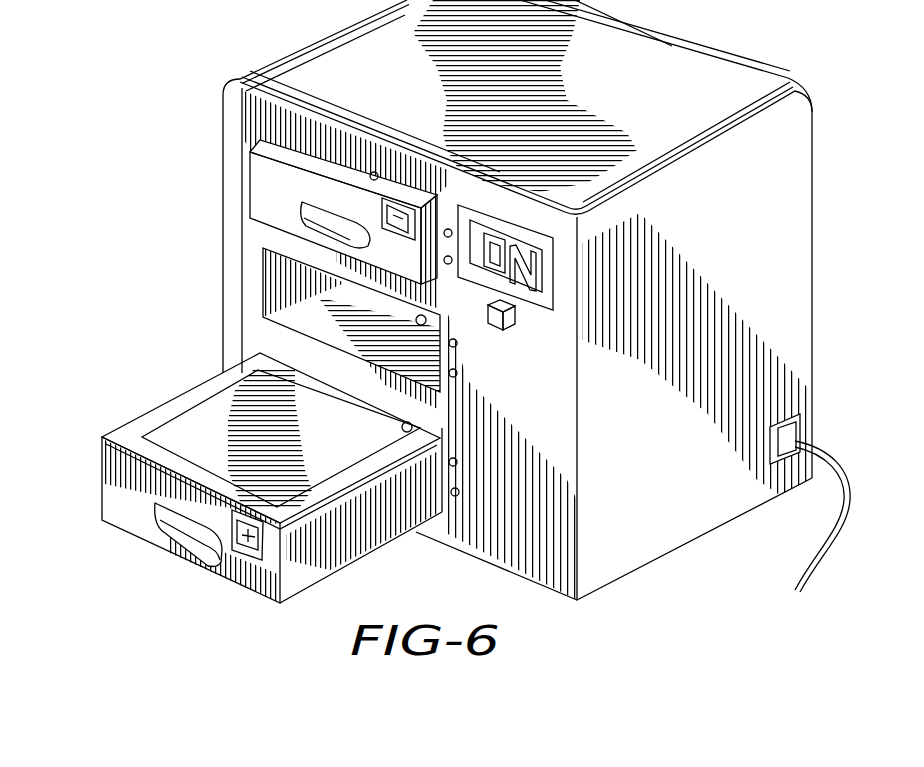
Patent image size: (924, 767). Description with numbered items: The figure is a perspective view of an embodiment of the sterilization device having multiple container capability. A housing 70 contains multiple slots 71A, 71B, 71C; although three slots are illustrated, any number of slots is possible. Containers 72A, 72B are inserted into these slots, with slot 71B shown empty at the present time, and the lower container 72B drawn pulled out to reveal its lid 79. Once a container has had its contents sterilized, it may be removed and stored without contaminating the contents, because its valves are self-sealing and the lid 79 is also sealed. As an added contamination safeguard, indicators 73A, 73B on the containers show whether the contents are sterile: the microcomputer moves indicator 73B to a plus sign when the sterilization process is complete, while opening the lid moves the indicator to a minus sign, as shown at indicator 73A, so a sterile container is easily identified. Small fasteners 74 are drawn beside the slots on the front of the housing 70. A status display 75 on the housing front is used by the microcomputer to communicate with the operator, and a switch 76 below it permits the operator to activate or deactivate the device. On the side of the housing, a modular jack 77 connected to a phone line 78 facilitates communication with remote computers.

The housing 70 is at (333, 64).
The slot 71A is at (377, 173).
The slot 71B is at (423, 315).
The slot 71C is at (411, 425).
The container 72A is at (257, 168).
The container 72B is at (120, 500).
The indicator 73A is at (413, 205).
The indicator 73B is at (247, 548).
The screws 74 is at (444, 234).
The status display 75 is at (501, 240).
The switch 76 is at (496, 330).
The modular jack 77 is at (797, 422).
The phone line 78 is at (827, 467).
The lid 79 is at (171, 433).